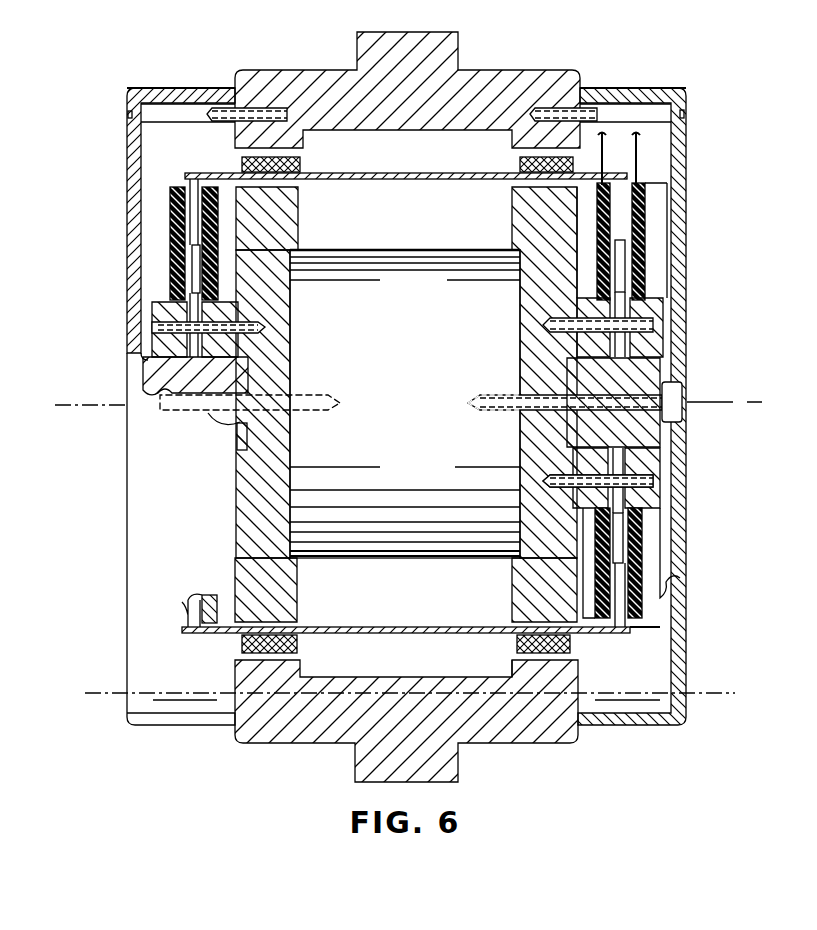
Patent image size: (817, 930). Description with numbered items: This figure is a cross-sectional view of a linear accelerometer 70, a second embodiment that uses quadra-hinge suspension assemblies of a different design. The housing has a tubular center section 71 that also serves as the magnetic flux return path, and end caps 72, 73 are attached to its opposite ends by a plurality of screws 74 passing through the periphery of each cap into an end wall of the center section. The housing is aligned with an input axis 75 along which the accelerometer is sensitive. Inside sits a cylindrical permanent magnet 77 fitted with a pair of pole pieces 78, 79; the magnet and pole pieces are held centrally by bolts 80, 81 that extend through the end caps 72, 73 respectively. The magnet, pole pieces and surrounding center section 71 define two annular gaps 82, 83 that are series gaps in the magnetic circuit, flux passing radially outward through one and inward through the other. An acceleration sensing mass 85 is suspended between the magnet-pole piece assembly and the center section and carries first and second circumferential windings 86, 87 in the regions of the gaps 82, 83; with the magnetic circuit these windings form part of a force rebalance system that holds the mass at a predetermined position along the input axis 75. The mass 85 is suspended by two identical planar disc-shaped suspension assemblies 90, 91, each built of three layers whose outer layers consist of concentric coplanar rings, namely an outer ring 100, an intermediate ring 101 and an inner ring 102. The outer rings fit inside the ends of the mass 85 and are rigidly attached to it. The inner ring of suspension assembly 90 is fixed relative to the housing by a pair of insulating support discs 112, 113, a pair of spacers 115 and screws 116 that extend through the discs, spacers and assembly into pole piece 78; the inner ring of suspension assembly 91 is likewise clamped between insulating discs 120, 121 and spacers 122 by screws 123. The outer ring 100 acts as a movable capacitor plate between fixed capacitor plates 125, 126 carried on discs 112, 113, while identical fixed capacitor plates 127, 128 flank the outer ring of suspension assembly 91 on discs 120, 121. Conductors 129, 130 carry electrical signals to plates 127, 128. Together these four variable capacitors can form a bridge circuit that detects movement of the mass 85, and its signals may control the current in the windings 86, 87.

The linear accelerometer 70 is at (540, 39).
The tubular center section 71 is at (318, 70).
The end cap 72 is at (127, 163).
The end cap 73 is at (687, 155).
The screws 74 is at (134, 100).
The input axis 75 is at (733, 402).
The cylindrical permanent magnet 77 is at (418, 248).
The pole piece 78 is at (298, 596).
The pole piece 79 is at (512, 592).
The bolt 80 is at (150, 378).
The bolt 81 is at (660, 380).
The annular gap 82 is at (303, 657).
The annular gap 83 is at (514, 652).
The acceleration sensing mass 85 is at (195, 600).
The first circumferential winding 86 is at (262, 655).
The second circumferential winding 87 is at (550, 655).
The suspension assembly 90 is at (208, 237).
The suspension assembly 91 is at (637, 636).
The outer ring 100 is at (282, 232).
The intermediate ring 101 is at (192, 268).
The inner ring 102 is at (276, 300).
The insulating support disc 112 is at (178, 235).
The insulating support disc 113 is at (228, 173).
The spacer 115 is at (265, 345).
The screws 116 is at (152, 340).
The insulating disc 120 is at (592, 612).
The insulating disc 121 is at (647, 580).
The spacer 122 is at (575, 462).
The screws 123 is at (665, 330).
The fixed capacitor plate 125 is at (218, 197).
The fixed capacitor plate 126 is at (170, 194).
The fixed capacitor plate 127 is at (645, 203).
The fixed capacitor plate 128 is at (597, 212).
The conductor 129 is at (602, 140).
The conductor 130 is at (638, 150).